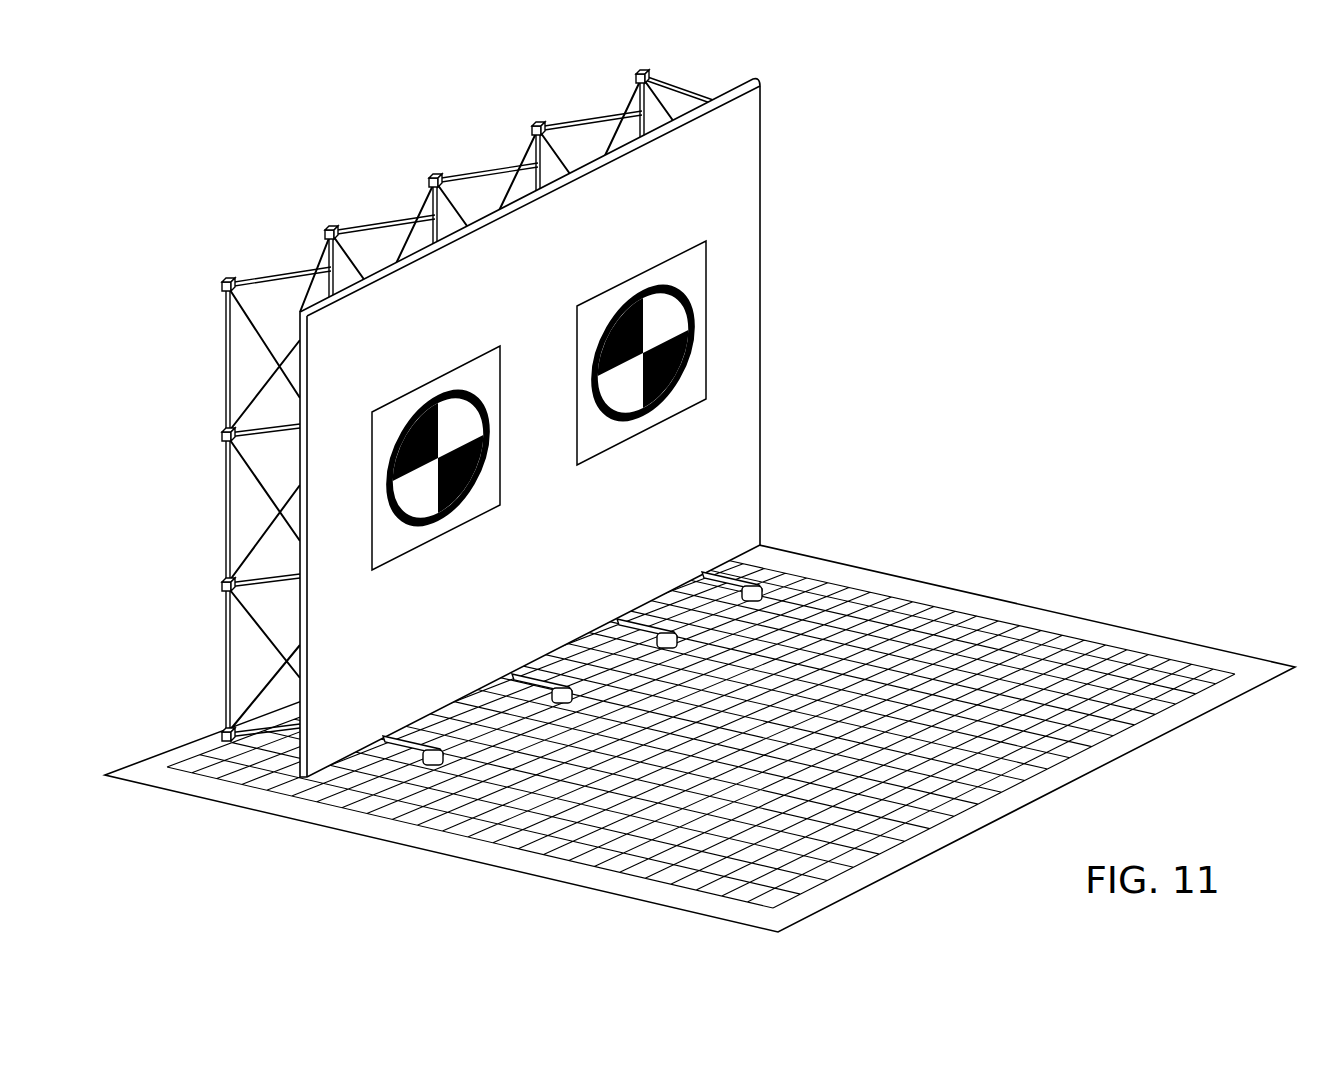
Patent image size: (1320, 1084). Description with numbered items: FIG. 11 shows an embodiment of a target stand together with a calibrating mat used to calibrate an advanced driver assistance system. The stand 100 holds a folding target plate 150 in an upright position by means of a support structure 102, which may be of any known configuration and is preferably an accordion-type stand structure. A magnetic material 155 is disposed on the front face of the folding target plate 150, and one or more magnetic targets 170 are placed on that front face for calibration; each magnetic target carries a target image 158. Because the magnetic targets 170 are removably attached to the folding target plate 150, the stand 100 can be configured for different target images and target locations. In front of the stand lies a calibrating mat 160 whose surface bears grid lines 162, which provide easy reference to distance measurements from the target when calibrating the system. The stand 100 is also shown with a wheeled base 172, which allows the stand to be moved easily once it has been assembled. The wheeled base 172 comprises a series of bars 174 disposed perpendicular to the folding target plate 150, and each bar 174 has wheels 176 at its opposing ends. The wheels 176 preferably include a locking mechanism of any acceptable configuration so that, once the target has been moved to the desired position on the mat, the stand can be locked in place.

The stand 100 is at (235, 127).
The support structure 102 is at (438, 177).
The folding target plate 150 is at (578, 428).
The magnetic material 155 is at (756, 238).
The image 158 is at (694, 298).
The calibrating mat 160 is at (700, 706).
The grid lines 162 is at (1035, 653).
The magnetic targets 170 is at (707, 380).
The wheeled base 172 is at (527, 721).
The bar 174 is at (400, 747).
The wheels 176 is at (433, 753).